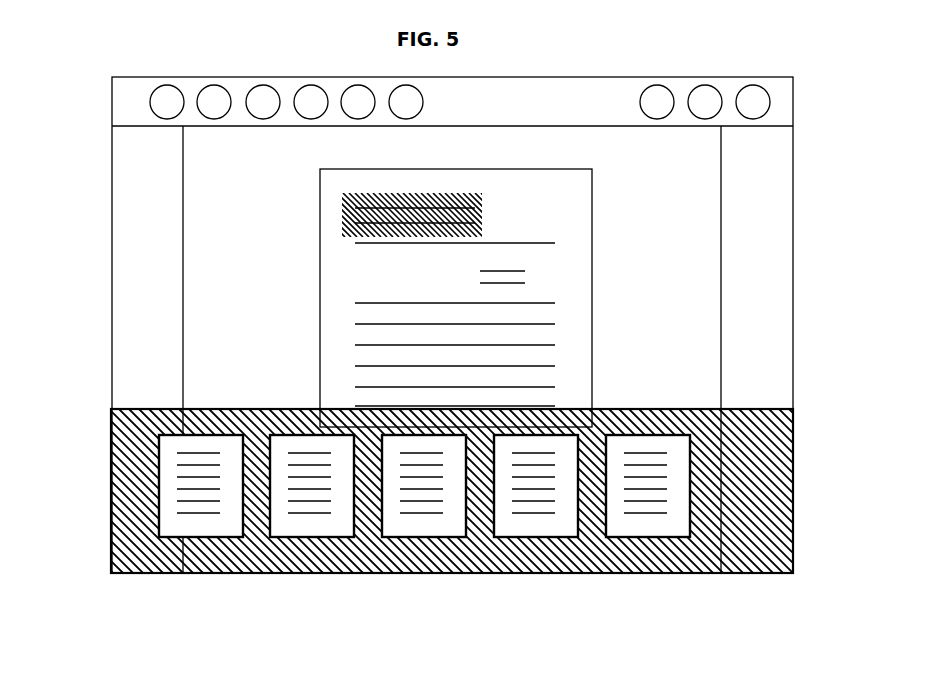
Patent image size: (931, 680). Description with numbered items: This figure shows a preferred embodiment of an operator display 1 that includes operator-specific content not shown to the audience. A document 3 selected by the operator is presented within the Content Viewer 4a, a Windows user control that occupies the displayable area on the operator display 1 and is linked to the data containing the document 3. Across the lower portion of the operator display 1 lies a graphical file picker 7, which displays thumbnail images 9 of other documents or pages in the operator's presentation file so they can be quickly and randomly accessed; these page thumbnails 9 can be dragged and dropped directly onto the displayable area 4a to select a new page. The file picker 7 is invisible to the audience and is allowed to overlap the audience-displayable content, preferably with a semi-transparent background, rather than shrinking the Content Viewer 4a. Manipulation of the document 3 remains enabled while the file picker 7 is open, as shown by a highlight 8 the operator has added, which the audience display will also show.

The operator display 1 is at (423, 325).
The document 3 is at (470, 298).
The Content Viewer 4a is at (721, 127).
The graphical file picker 7 is at (465, 491).
The highlight 8 is at (410, 211).
The thumbnail images 9 is at (625, 540).